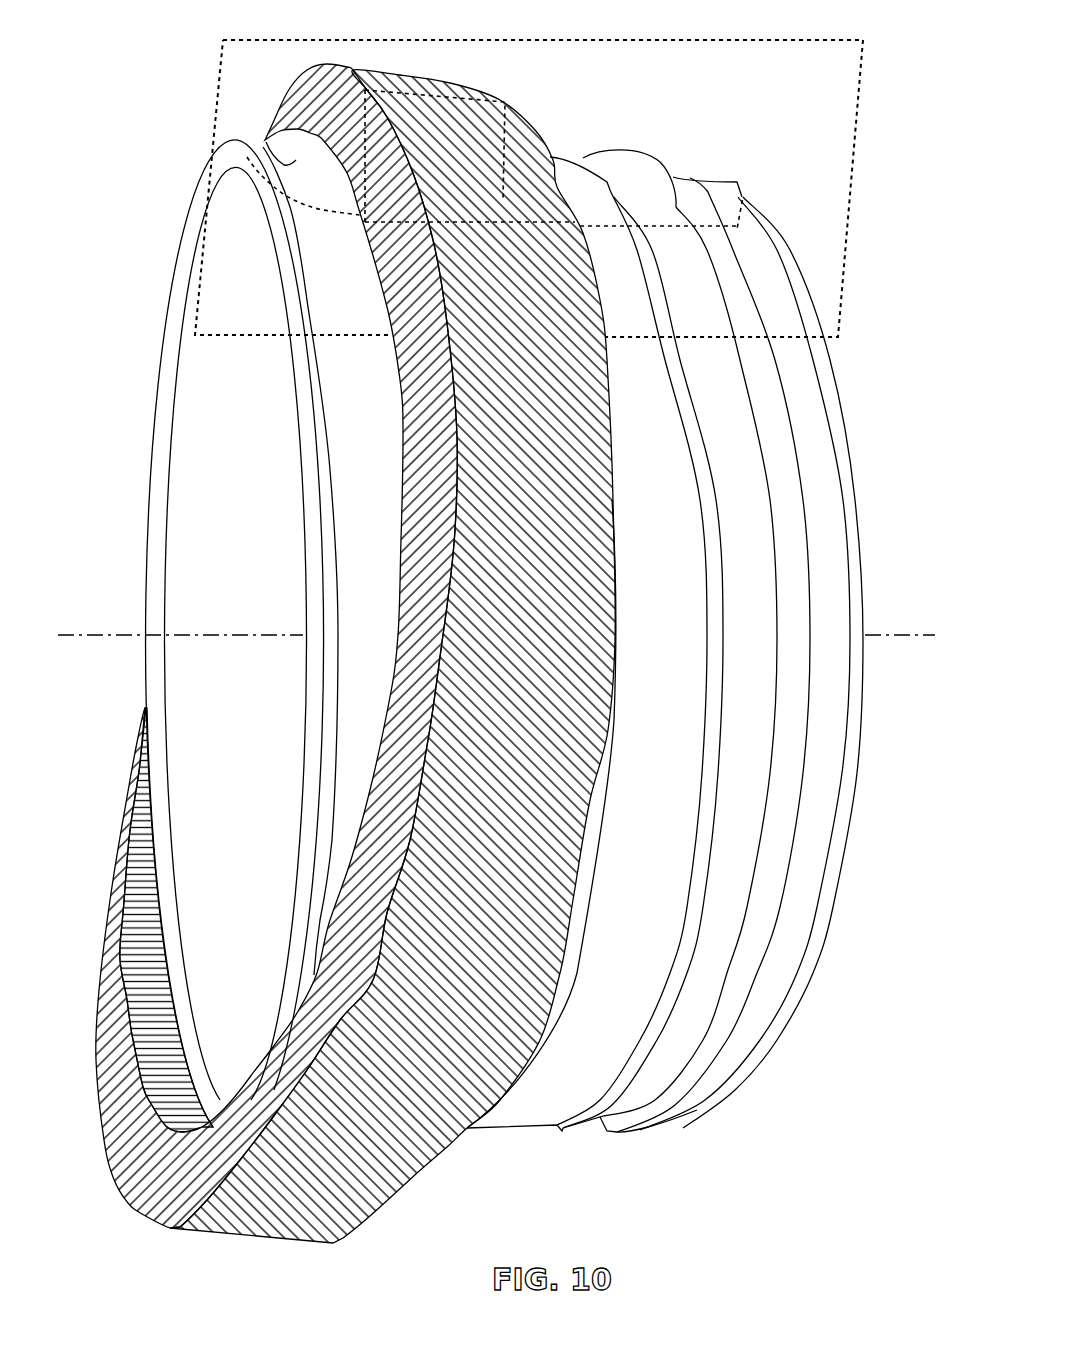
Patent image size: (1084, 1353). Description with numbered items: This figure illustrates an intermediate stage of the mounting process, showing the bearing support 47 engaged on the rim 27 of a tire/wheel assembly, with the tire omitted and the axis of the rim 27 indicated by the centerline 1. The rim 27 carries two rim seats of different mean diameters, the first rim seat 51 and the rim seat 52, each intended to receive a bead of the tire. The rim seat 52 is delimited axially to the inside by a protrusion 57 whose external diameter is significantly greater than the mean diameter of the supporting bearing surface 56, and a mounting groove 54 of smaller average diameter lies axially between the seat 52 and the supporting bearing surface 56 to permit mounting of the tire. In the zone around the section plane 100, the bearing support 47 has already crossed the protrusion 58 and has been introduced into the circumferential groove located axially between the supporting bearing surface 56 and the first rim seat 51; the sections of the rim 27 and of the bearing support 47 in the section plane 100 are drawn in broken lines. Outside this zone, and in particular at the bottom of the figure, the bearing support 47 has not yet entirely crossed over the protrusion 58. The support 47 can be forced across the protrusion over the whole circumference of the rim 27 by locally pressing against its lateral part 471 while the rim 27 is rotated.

The tube axis 1 is at (110, 633).
The rim 27 is at (172, 300).
The bearing support 47 is at (385, 88).
The lateral part 471 is at (421, 405).
The first rim seat 51 is at (257, 136).
The rim seat 52 is at (806, 387).
The mounting groove 54 is at (603, 1113).
The supporting bearing surface 56 is at (567, 187).
The protrusion 57 is at (643, 153).
The protrusion 58 is at (278, 141).
The section plane 100 is at (530, 188).